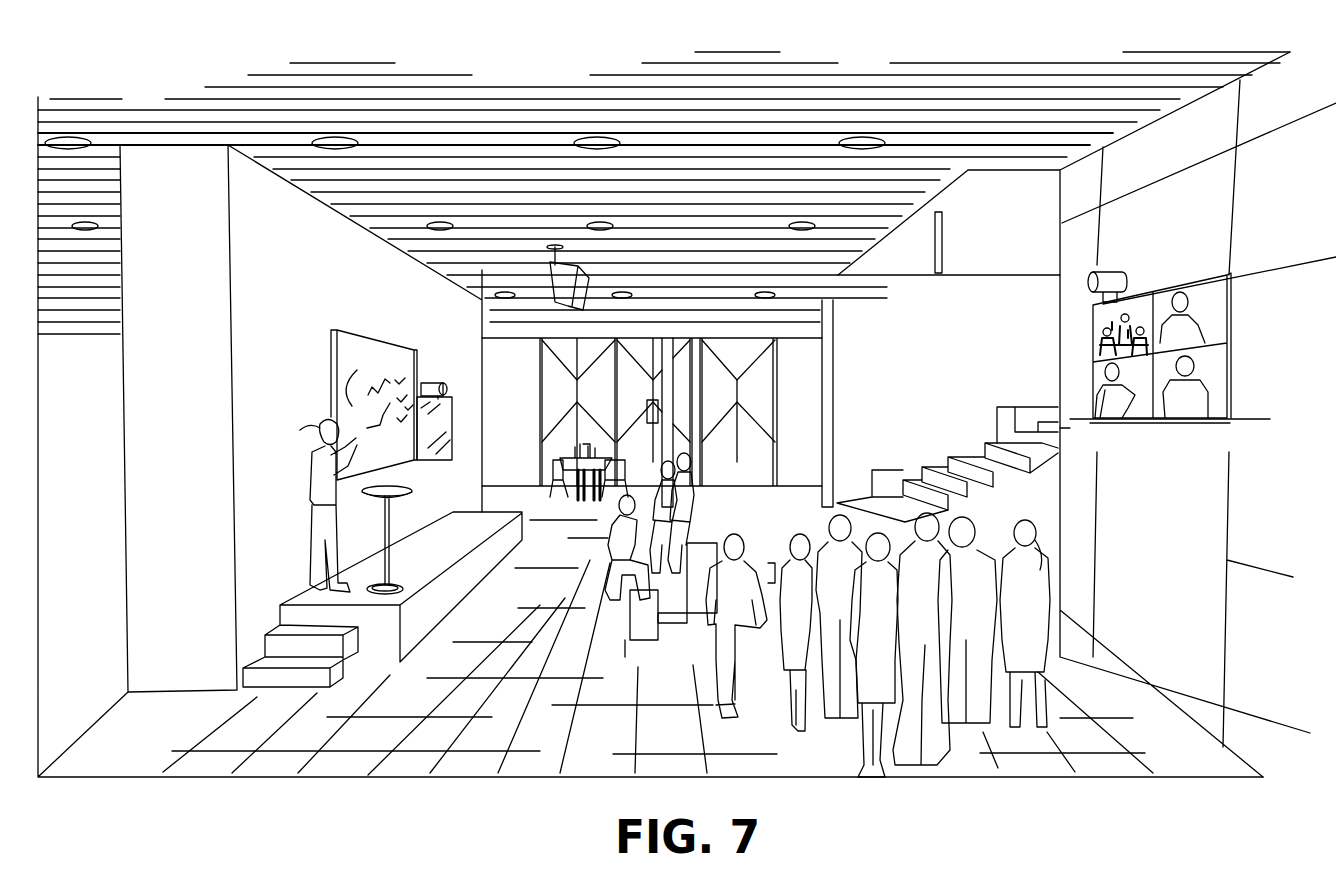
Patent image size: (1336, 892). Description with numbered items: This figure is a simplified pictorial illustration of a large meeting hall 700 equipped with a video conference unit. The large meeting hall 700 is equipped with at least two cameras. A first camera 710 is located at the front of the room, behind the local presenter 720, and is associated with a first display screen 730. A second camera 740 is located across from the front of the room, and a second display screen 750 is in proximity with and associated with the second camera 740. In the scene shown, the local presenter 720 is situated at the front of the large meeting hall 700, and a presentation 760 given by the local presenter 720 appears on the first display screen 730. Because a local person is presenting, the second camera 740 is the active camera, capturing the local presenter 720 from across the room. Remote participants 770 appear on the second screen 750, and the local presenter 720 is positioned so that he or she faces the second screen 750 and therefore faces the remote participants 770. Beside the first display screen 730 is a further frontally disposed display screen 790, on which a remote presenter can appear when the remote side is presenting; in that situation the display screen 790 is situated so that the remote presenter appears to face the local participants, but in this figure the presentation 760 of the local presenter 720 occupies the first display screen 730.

The large meeting hall 700 is at (930, 113).
The first camera 710 is at (430, 378).
The local presenter 720 is at (318, 418).
The first display screen 730 is at (330, 363).
The second camera 740 is at (1110, 268).
The second display screen 750 is at (1216, 337).
The presentation 760 is at (378, 364).
The remote participants 770 is at (1232, 428).
The display screen 790 is at (454, 414).